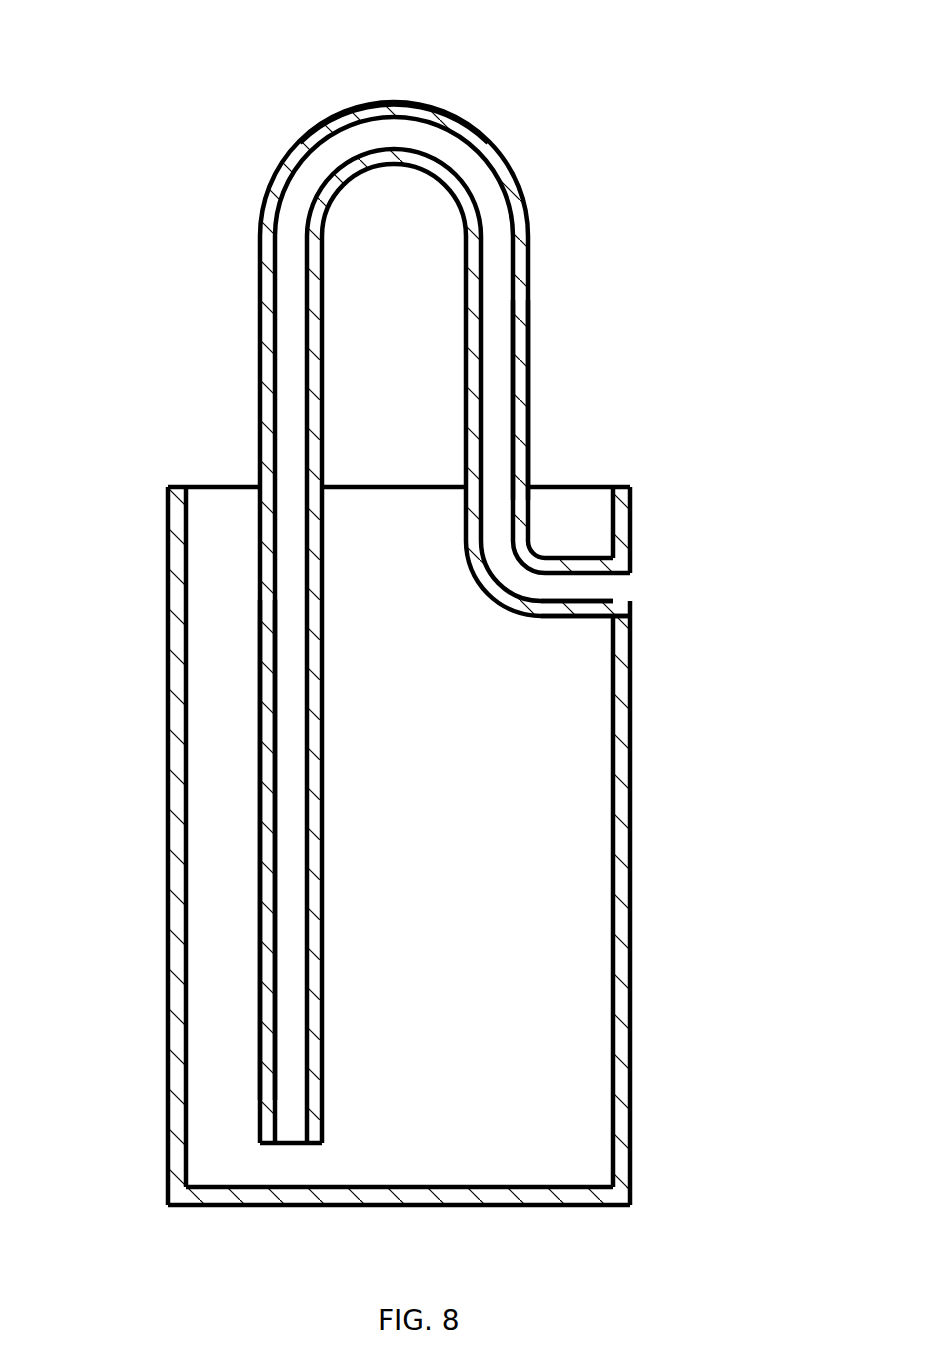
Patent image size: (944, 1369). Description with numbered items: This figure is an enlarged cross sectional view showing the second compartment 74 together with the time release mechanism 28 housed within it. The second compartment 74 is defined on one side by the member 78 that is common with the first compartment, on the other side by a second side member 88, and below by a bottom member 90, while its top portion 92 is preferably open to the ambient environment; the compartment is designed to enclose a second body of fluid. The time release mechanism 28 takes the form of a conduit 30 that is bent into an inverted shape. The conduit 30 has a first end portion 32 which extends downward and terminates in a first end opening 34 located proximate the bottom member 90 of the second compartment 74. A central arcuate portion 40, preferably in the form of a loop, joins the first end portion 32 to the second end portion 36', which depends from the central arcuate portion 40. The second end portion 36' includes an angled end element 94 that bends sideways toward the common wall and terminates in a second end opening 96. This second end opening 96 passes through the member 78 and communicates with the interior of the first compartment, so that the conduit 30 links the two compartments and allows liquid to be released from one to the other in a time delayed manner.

The time release mechanism 28 is at (470, 116).
The conduit 30 is at (395, 99).
The first end portion 32 is at (270, 836).
The first end opening 34 is at (297, 1132).
The second end portion 36' is at (587, 400).
The central arcuate portion 40 is at (313, 157).
The second compartment 74 is at (503, 1073).
The member 78 is at (631, 762).
The second side member 88 is at (178, 632).
The bottom member 90 is at (253, 1193).
The top portion 92 is at (212, 486).
The angled end element 94 is at (543, 612).
The second end opening 96 is at (630, 587).